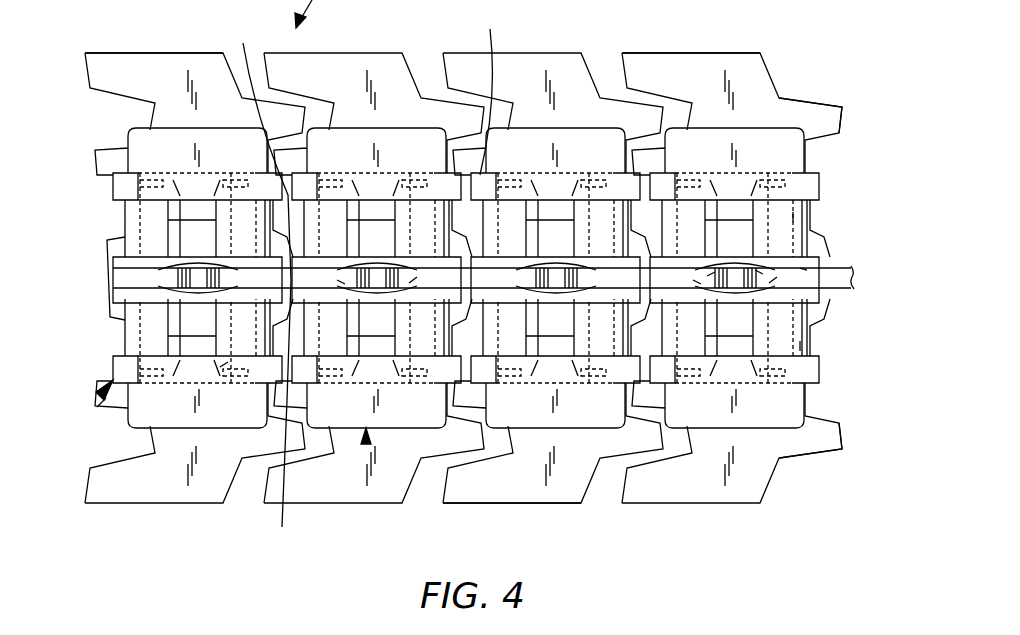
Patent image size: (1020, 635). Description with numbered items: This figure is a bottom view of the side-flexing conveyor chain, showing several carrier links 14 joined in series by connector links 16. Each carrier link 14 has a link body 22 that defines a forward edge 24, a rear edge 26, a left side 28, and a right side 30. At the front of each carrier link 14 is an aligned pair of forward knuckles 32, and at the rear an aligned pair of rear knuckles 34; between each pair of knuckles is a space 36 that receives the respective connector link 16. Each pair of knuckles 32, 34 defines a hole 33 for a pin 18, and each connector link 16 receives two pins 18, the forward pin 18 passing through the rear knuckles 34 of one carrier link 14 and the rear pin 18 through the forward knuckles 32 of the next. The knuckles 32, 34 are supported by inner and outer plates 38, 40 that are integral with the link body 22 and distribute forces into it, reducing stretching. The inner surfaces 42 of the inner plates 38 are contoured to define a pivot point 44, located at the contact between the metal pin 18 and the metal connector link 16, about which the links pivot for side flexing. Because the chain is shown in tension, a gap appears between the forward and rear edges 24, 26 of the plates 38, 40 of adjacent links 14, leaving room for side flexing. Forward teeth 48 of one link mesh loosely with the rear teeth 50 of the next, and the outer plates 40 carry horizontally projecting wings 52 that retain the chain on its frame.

The carrier link 14 is at (176, 53).
The connector link 16 is at (417, 277).
The pin 18 is at (220, 367).
The link body 22 is at (97, 407).
The forward edge 24 is at (90, 397).
The rear edge 26 is at (382, 281).
The left side 28 is at (111, 53).
The right side 30 is at (182, 507).
The forward knuckles 32 is at (123, 210).
The hole 33 is at (793, 218).
The rear knuckles 34 is at (125, 220).
The space 36 is at (113, 273).
The inner plates 38 is at (807, 253).
The outer plates 40 is at (113, 188).
The inner surfaces 42 is at (807, 270).
The pivot point 44 is at (763, 274).
The forward teeth 48 is at (457, 494).
The rear teeth 50 is at (843, 106).
The wings 52 is at (173, 162).